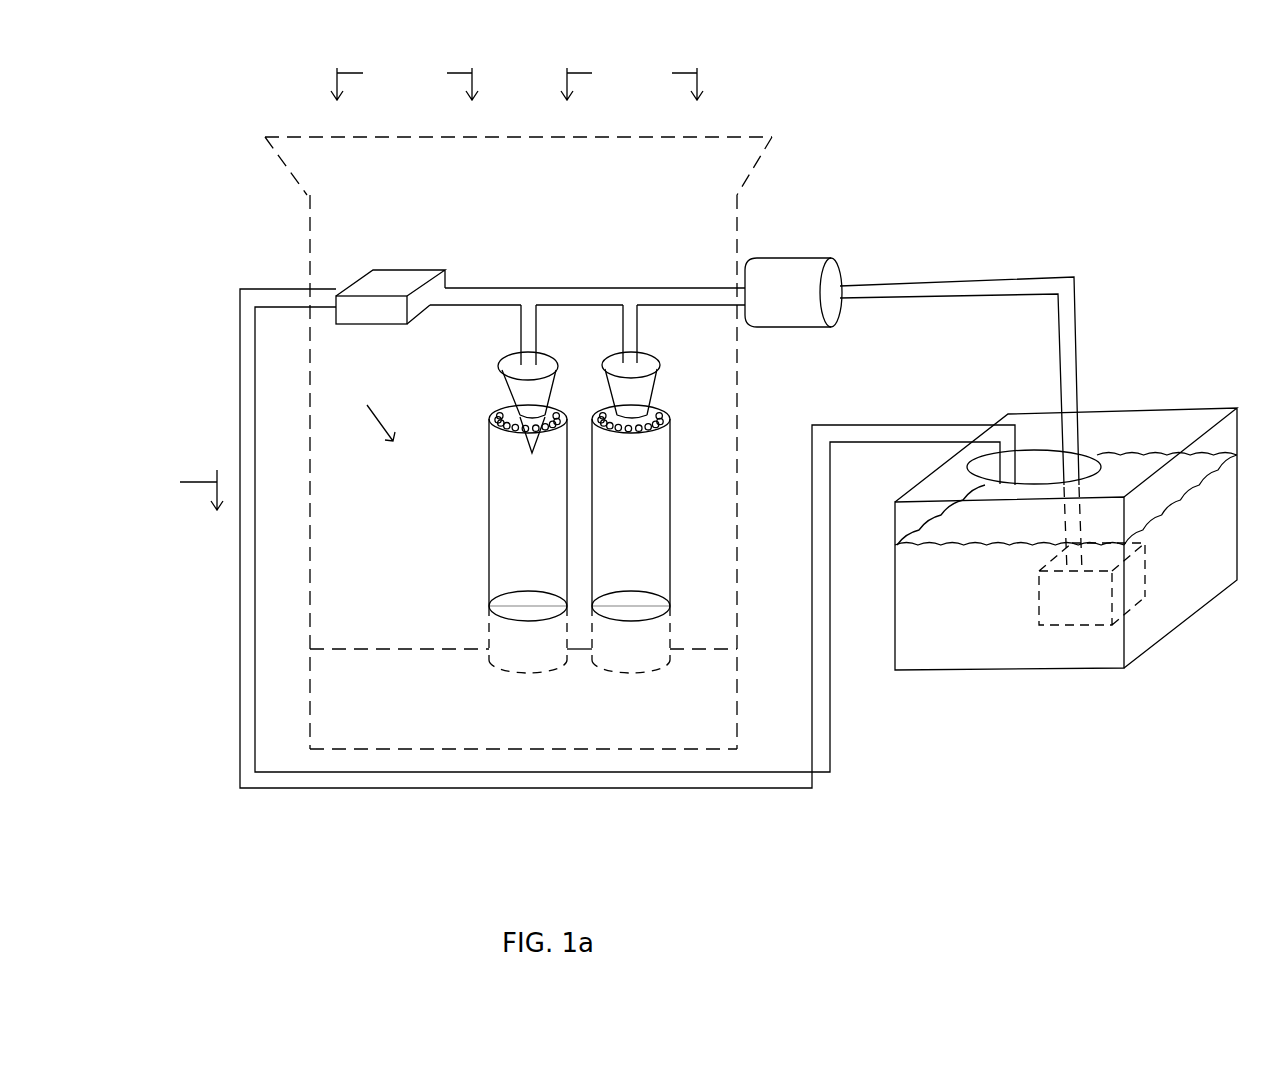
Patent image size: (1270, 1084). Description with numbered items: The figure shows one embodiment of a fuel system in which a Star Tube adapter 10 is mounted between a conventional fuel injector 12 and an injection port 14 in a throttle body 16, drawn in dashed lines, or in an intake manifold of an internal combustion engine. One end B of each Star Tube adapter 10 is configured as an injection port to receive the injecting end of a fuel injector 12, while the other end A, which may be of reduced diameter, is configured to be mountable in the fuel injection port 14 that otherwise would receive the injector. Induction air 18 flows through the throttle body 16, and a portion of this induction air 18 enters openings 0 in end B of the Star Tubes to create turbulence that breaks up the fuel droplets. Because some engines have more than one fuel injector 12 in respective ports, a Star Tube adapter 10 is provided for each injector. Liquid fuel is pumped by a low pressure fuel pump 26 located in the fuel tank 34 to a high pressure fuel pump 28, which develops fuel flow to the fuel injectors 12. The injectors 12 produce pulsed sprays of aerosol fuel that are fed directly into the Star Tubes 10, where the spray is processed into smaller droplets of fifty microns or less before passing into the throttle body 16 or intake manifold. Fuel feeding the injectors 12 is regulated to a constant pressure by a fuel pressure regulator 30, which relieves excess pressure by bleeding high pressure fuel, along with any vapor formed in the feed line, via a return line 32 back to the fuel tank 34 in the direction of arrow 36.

The Star Tube adapter 10 is at (466, 513).
The fuel injector 12 is at (513, 398).
The injection port 14 is at (488, 663).
The throttle body 16 is at (742, 215).
The induction air 18 is at (517, 249).
The low pressure fuel pump 26 is at (1040, 627).
The high pressure fuel pump 28 is at (806, 258).
The fuel pressure regulator 30 is at (392, 285).
The return line 32 is at (240, 382).
The fuel tank 34 is at (1138, 413).
The arrow 36 is at (181, 490).
The end of Star Tube adapter A is at (489, 607).
The end of Star Tube adapter B is at (488, 428).
The openings 0 is at (532, 453).